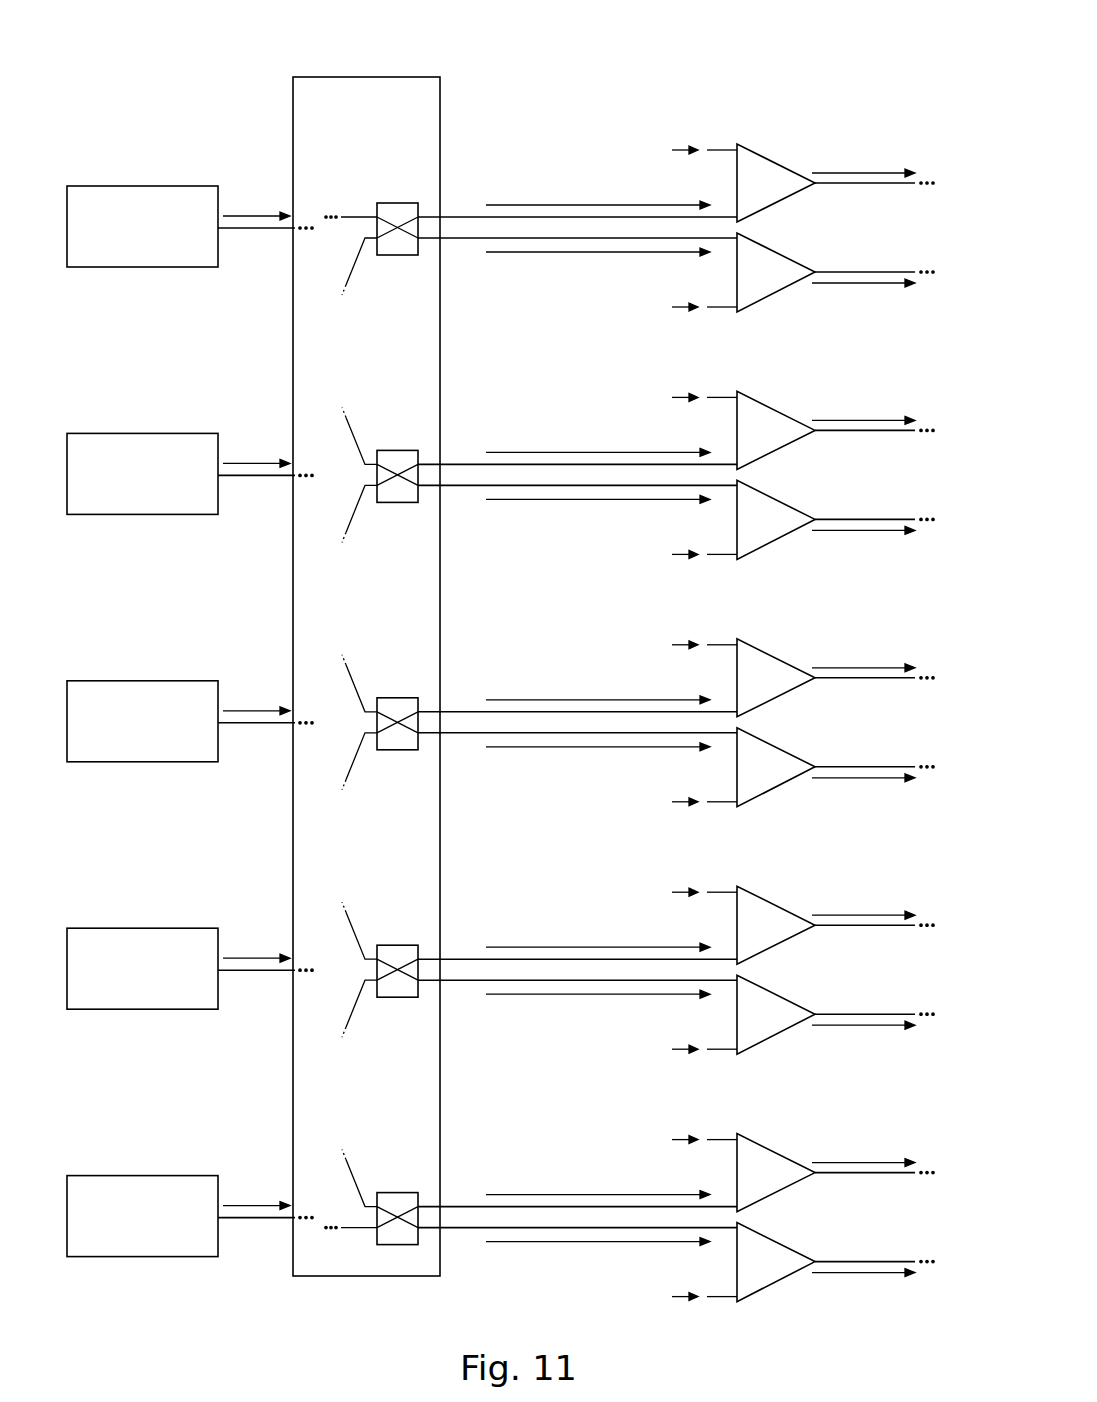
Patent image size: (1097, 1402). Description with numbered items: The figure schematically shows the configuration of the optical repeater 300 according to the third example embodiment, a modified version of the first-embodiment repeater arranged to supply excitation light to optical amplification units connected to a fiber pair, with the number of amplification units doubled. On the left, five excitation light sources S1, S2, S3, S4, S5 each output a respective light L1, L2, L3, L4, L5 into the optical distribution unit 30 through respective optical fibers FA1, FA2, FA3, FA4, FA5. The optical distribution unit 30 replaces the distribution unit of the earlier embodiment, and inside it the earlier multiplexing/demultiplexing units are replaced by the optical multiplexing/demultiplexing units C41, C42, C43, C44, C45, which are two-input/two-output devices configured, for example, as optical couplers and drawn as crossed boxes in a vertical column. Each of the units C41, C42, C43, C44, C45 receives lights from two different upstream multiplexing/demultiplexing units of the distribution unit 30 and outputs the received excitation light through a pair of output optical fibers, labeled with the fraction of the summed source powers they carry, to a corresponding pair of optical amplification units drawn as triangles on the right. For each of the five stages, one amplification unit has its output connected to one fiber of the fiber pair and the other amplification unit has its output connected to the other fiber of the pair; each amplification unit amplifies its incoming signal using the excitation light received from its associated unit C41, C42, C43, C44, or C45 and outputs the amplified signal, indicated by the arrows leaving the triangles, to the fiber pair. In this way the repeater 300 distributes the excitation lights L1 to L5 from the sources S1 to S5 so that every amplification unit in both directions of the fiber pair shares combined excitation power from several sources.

The optical repeater 300 is at (792, 93).
The optical distribution unit 30 is at (293, 128).
The excitation light source S1 is at (145, 186).
The excitation light source S2 is at (142, 453).
The excitation light source S3 is at (142, 701).
The excitation light source S4 is at (142, 948).
The excitation light source S5 is at (142, 1196).
The light L1 is at (256, 204).
The light L2 is at (256, 451).
The light L3 is at (256, 699).
The light L4 is at (256, 946).
The light L5 is at (256, 1194).
The optical fiber FA1 is at (250, 235).
The optical fiber FA2 is at (265, 504).
The optical fiber FA3 is at (265, 752).
The optical fiber FA4 is at (265, 999).
The optical fiber FA5 is at (265, 1246).
The optical multiplexing/demultiplexing unit C41 is at (371, 235).
The optical multiplexing/demultiplexing unit C42 is at (380, 474).
The optical multiplexing/demultiplexing unit C43 is at (380, 722).
The optical multiplexing/demultiplexing unit C44 is at (380, 969).
The optical multiplexing/demultiplexing unit C45 is at (371, 1197).